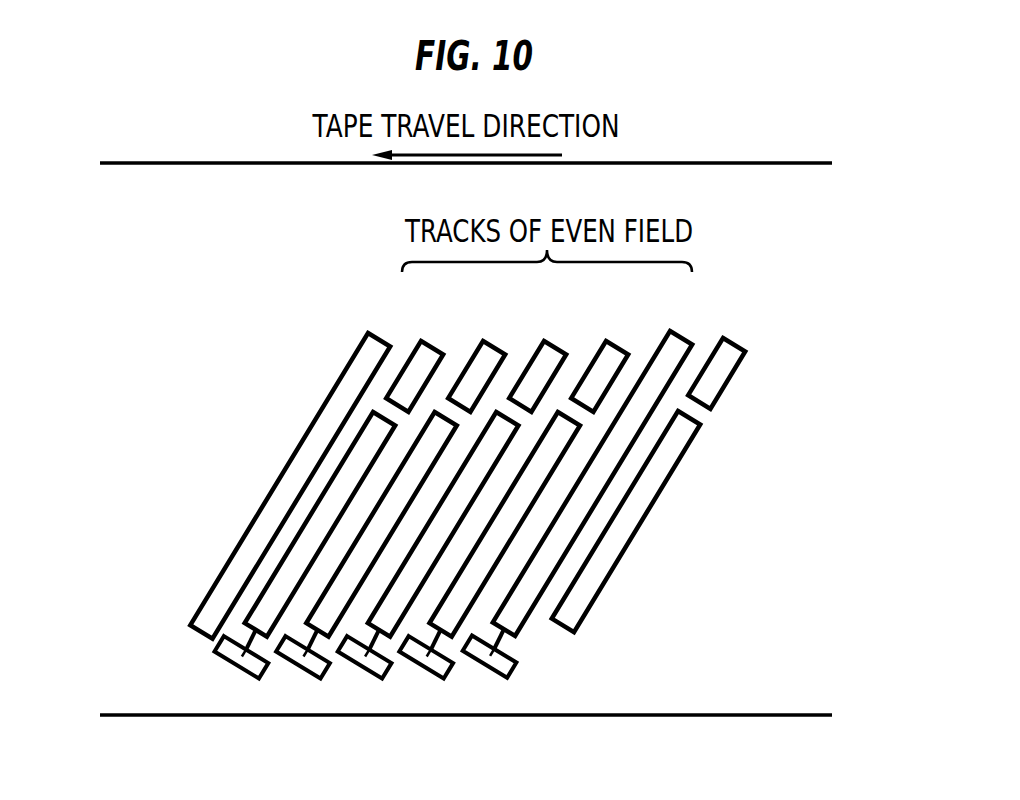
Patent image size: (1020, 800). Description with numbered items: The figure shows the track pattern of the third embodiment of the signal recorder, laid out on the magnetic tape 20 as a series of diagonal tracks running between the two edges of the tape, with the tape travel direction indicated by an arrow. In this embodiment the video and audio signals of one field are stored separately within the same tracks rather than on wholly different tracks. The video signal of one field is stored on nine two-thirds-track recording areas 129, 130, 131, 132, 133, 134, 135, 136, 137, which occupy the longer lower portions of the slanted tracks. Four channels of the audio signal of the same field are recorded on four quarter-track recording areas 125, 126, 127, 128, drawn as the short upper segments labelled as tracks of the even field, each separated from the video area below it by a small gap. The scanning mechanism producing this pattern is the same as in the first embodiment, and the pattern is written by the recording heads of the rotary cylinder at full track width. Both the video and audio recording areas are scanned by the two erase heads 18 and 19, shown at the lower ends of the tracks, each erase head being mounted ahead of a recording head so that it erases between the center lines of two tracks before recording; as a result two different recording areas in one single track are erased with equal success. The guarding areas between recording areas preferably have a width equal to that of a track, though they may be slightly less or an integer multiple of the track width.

The erase head 18 is at (226, 660).
The erase head 19 is at (288, 660).
The magnetic tape 20 is at (660, 648).
The ¼-track recording area 125 is at (421, 340).
The ¼-track recording area 126 is at (483, 340).
The ¼-track recording area 127 is at (545, 340).
The ¼-track recording area 128 is at (606, 340).
The ⅔-track recording area 129 is at (266, 619).
The ⅔-track recording area 130 is at (305, 608).
The ⅔-track recording area 131 is at (339, 597).
The ⅔-track recording area 132 is at (372, 595).
The ⅔-track recording area 133 is at (407, 590).
The ⅔-track recording area 134 is at (435, 587).
The ⅔-track recording area 135 is at (463, 590).
The ⅔-track recording area 136 is at (487, 603).
The ⅔-track recording area 137 is at (515, 611).